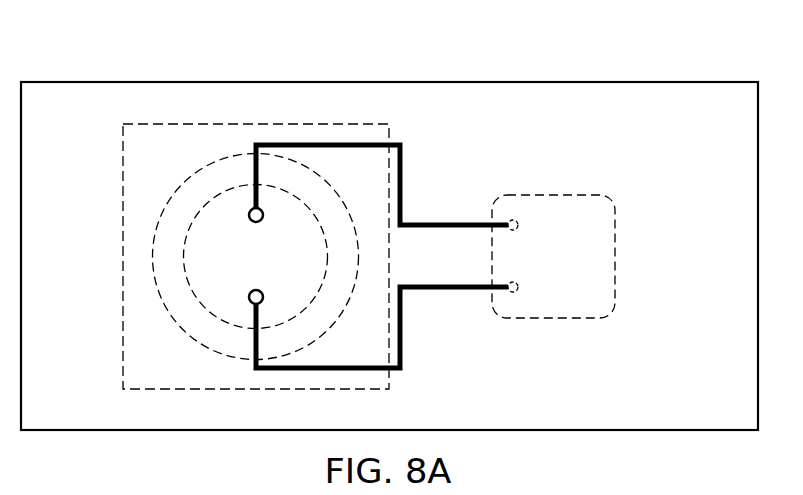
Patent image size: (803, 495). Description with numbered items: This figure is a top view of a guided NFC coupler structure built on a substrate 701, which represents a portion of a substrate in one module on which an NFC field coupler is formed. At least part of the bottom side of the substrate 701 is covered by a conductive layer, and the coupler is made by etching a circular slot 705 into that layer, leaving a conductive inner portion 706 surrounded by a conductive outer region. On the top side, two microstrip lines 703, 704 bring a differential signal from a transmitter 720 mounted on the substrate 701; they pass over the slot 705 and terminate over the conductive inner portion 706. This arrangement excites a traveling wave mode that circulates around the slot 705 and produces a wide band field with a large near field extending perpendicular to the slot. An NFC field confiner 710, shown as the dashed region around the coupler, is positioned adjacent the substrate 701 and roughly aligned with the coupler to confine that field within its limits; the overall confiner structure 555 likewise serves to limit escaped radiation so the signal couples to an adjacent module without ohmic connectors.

The NFC field confiner 555 is at (389, 224).
The substrate 701 is at (390, 90).
The NFC field confiner 710 is at (123, 335).
The circular slot 705 is at (195, 338).
The conductive inner portion 706 is at (220, 193).
The microstrip line 704 is at (400, 165).
The microstrip line 703 is at (400, 350).
The transmitter 720 is at (553, 193).